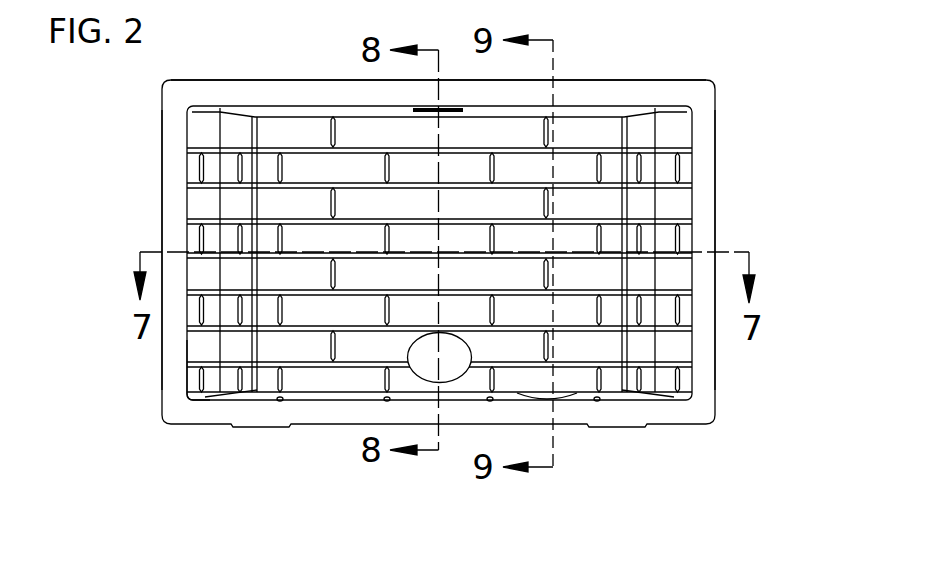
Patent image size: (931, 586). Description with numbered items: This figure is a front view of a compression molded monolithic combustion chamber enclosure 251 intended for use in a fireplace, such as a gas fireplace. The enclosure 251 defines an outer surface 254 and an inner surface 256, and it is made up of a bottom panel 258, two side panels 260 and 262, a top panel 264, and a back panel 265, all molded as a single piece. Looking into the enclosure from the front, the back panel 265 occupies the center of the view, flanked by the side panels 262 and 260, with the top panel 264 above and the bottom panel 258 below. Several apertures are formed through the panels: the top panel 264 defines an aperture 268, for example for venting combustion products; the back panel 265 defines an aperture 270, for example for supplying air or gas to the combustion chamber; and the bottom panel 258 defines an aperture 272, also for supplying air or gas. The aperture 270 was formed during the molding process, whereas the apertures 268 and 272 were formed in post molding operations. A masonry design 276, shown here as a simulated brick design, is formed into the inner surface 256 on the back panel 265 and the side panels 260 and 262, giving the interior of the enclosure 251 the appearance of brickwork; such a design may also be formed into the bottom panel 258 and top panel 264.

The combustion chamber enclosure 251 is at (730, 68).
The outer surface 254 is at (603, 80).
The top panel 264 is at (282, 95).
The side panel 262 is at (175, 197).
The side panel 260 is at (705, 235).
The masonry design 276 is at (658, 205).
The back panel 265 is at (399, 214).
The aperture 270 is at (428, 352).
The aperture 268 is at (440, 108).
The inner surface 256 is at (186, 347).
The bottom panel 258 is at (280, 410).
The aperture 272 is at (563, 397).